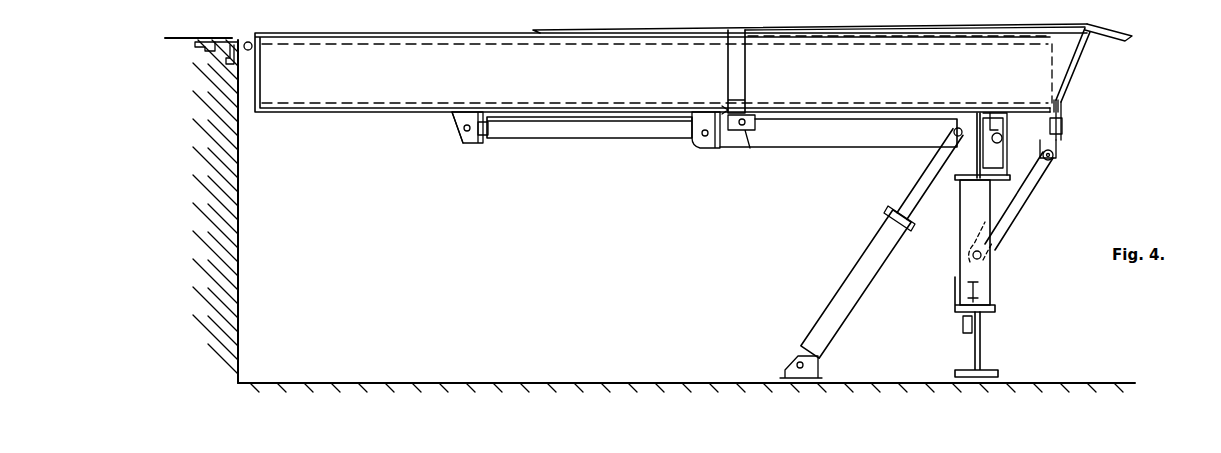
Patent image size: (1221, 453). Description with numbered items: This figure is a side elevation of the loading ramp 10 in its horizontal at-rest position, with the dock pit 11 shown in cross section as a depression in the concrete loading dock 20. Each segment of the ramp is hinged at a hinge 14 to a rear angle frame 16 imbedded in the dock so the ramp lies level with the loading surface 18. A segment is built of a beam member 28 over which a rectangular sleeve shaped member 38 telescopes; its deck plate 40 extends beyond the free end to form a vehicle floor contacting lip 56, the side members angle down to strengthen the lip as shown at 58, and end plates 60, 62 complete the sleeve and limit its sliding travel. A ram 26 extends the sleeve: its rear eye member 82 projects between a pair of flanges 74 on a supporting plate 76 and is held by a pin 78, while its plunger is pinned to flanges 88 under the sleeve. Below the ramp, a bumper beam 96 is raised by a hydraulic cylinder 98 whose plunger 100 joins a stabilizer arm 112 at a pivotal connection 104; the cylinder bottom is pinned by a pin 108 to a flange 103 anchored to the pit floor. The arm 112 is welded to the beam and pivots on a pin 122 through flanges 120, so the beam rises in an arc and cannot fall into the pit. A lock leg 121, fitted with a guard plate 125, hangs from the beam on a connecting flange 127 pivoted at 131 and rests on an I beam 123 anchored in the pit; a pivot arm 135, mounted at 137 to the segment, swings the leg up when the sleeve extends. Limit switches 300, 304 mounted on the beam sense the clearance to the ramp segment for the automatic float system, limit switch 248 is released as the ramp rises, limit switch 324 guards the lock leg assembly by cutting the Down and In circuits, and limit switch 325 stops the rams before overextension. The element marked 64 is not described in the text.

The loading ramp 10 is at (457, 50).
The dock pit 11 is at (645, 248).
The hinge 14 is at (253, 40).
The rear angle frame 16 is at (227, 40).
The loading surface 18 is at (172, 37).
The loading dock 20 is at (192, 42).
The ram 26 is at (592, 127).
The beam member 28 is at (342, 57).
The sleeve shaped member 38 is at (847, 52).
The deck plate 40 is at (917, 24).
The lip 56 is at (1110, 28).
The angled side member extension 58 is at (1060, 47).
The end plate 60 is at (1072, 68).
The end plate 62 is at (1063, 97).
The bracket 64 is at (1064, 126).
The flange 74 is at (453, 136).
The supporting plate 76 is at (450, 116).
The pin 78 is at (467, 132).
The eye member 82 is at (485, 137).
The flange 88 is at (747, 133).
The bumper beam 96 is at (960, 178).
The hydraulic cylinder 98 is at (862, 260).
The plunger 100 is at (912, 193).
The flange 103 is at (790, 365).
The pivotal connection 104 is at (953, 134).
The pin 108 is at (797, 355).
The stabilizer arm 112 is at (812, 135).
The flange 120 is at (692, 146).
The lock leg 121 is at (985, 268).
The pin 122 is at (705, 137).
The I beam 123 is at (982, 345).
The guard plate 125 is at (955, 295).
The connecting flange 127 is at (993, 155).
The pivot 131 is at (998, 133).
The pivot arm 135 is at (1020, 202).
The pivotal mounting 137 is at (1055, 154).
The limit switch 248 is at (962, 325).
The limit switch 300 is at (953, 112).
The limit switch 304 is at (990, 113).
The limit switch 324 is at (980, 292).
The limit switch 325 is at (723, 107).